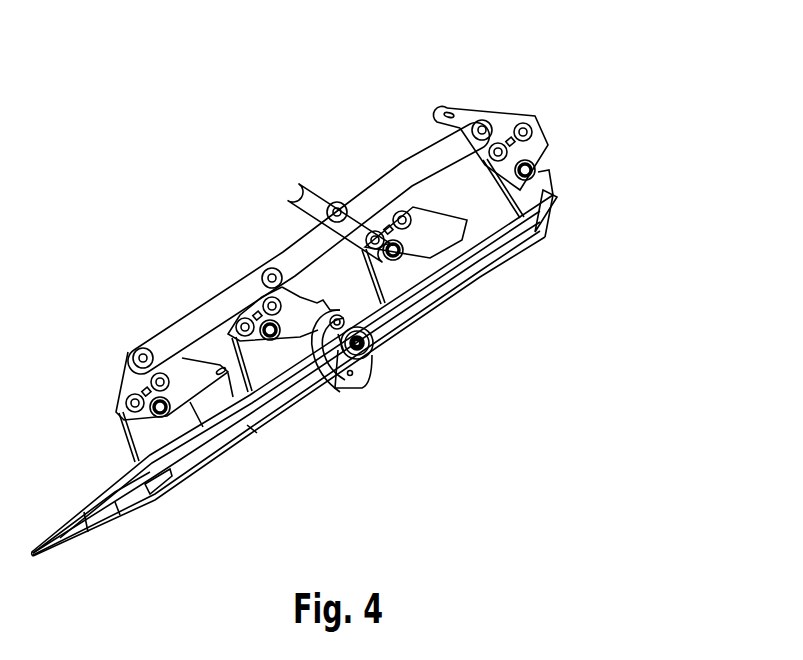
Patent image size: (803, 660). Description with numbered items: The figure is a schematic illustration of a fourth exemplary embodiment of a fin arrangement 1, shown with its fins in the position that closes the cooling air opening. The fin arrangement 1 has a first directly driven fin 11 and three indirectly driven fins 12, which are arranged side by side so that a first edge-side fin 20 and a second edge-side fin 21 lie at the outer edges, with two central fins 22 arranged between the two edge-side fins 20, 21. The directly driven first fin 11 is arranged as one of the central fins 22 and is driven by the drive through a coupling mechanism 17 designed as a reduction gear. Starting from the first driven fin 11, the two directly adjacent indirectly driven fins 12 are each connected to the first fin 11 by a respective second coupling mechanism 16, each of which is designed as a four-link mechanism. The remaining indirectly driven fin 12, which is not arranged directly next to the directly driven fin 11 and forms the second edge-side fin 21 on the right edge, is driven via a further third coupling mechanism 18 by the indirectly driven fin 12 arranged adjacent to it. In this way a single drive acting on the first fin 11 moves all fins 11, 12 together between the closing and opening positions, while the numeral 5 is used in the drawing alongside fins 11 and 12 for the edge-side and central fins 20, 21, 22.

The fin arrangement 1 is at (597, 109).
The guide rail 5 is at (214, 433).
The first directly driven fin 11 is at (286, 393).
The indirectly driven fin 12 is at (288, 396).
The second coupling mechanism 16 is at (283, 250).
The coupling mechanism 17 is at (333, 390).
The third coupling mechanism 18 is at (401, 156).
The first edge-side fin 20 is at (117, 508).
The second edge-side fin 21 is at (490, 247).
The central fin 22 is at (385, 330).